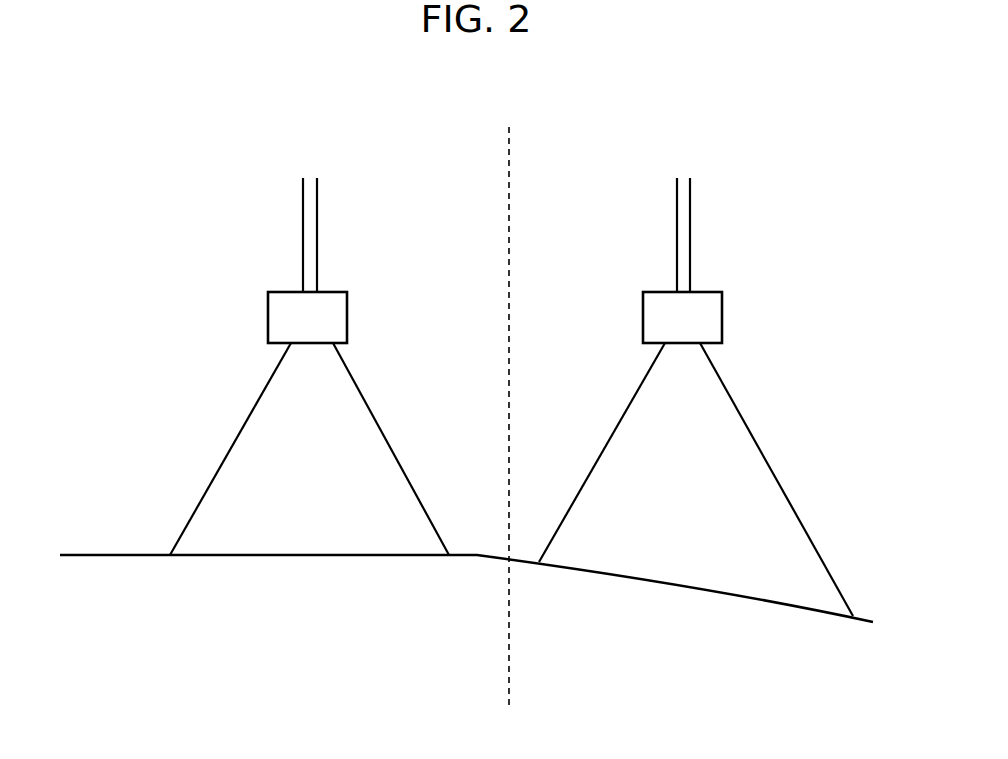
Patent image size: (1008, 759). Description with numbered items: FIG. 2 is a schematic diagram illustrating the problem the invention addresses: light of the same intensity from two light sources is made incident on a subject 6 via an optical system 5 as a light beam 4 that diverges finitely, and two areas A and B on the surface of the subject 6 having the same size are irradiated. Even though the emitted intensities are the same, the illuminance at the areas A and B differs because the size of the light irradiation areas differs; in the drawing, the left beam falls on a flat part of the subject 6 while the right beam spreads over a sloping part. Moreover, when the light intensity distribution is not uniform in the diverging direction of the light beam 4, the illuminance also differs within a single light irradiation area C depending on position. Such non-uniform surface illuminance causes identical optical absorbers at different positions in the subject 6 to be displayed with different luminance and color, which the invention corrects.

The light beam 4 is at (605, 448).
The optical system 5 is at (658, 308).
The subject 6 is at (127, 598).
The area A is at (411, 558).
The area B is at (762, 608).
The light irradiation area C is at (455, 598).